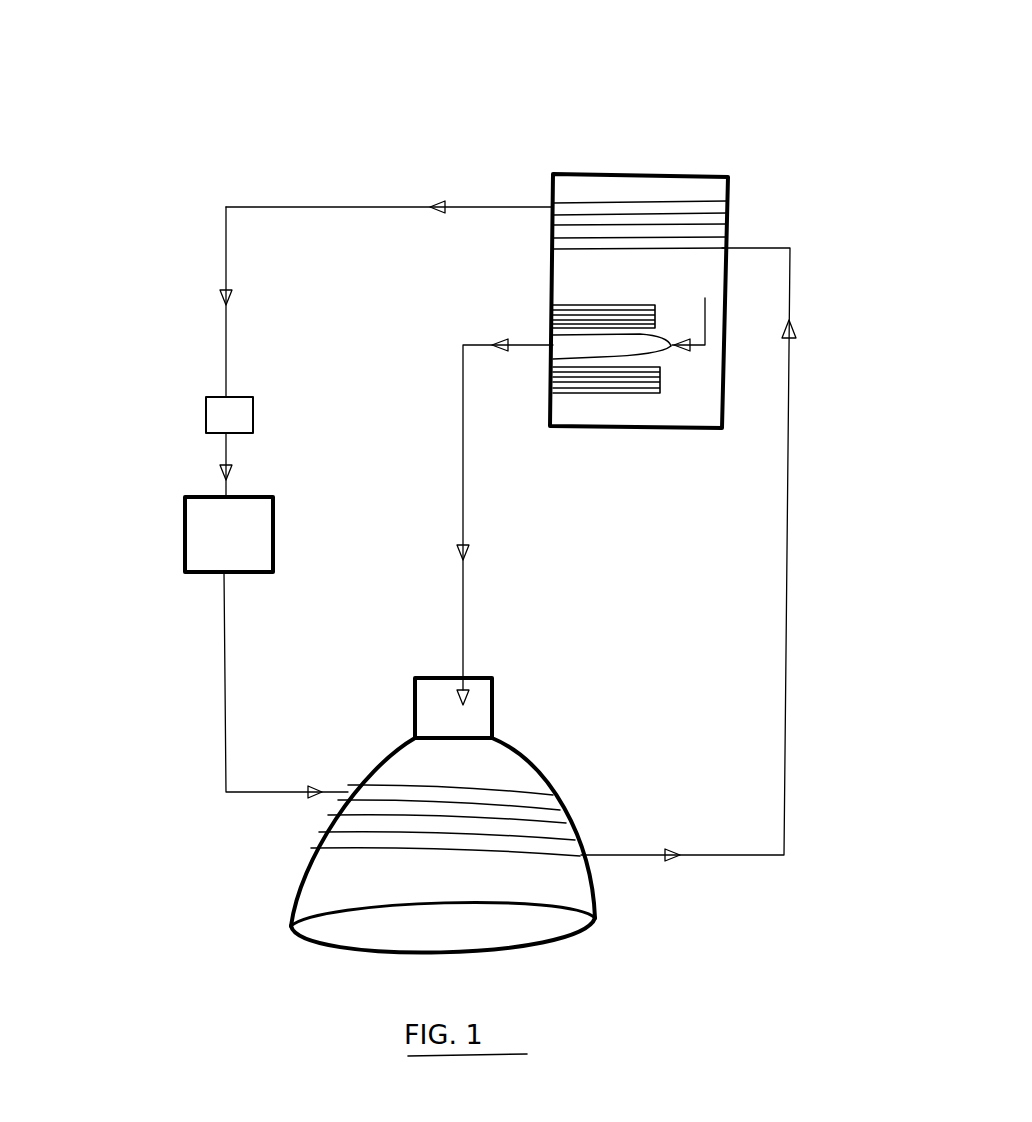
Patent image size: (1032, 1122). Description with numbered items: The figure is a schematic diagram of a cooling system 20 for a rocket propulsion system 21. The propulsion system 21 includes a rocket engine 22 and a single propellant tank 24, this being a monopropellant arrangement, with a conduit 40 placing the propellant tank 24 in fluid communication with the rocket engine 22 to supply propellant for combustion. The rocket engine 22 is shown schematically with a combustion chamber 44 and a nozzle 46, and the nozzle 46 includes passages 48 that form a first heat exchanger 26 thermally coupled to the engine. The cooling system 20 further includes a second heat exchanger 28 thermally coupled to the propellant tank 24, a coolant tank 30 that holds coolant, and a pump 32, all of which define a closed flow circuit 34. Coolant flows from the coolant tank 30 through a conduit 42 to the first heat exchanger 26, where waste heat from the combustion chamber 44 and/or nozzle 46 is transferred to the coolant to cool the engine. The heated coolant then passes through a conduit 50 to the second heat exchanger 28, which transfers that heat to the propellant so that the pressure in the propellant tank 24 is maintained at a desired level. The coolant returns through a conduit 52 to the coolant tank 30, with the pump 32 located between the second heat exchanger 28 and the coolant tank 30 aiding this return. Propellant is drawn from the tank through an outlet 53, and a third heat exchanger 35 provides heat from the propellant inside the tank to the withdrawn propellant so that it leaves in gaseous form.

The cooling system 20 is at (122, 308).
The propulsion system 21 is at (863, 130).
The rocket engine 22 is at (557, 704).
The propellant tank 24 is at (655, 176).
The first heat exchanger 26 is at (345, 830).
The second heat exchanger 28 is at (712, 225).
The coolant tank 30 is at (188, 542).
The pump 32 is at (208, 420).
The flow circuit 34 is at (300, 186).
The third heat exchanger 35 is at (613, 380).
The conduit 40 is at (463, 512).
The conduit 42 is at (225, 680).
The combustion chamber 44 is at (418, 699).
The nozzle 46 is at (312, 893).
The passages 48 is at (542, 805).
The conduit 50 is at (790, 578).
The conduit 52 is at (385, 207).
The outlet 53 is at (662, 349).